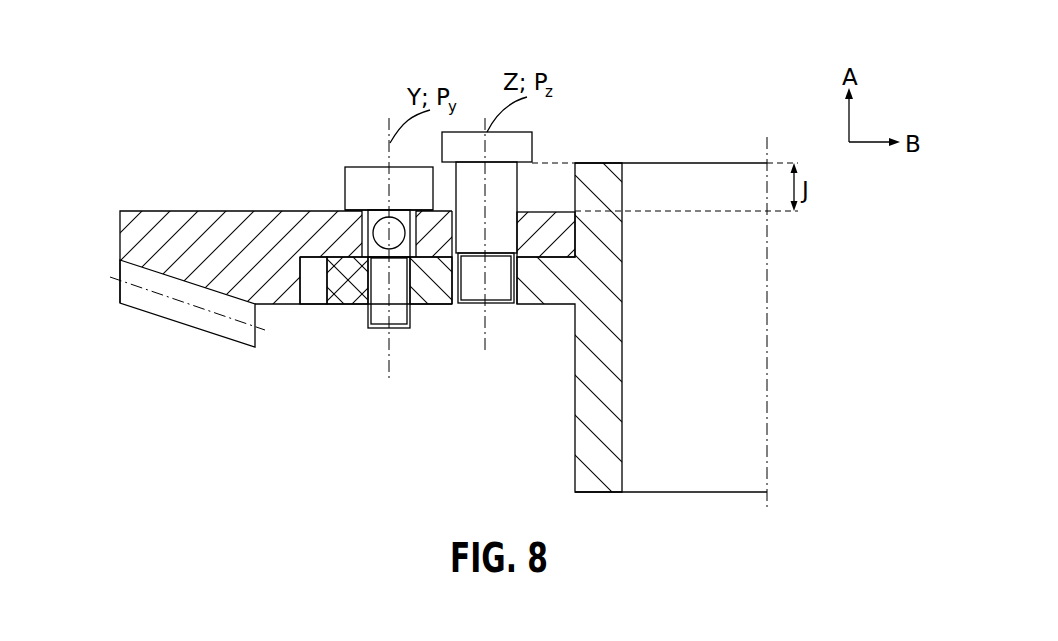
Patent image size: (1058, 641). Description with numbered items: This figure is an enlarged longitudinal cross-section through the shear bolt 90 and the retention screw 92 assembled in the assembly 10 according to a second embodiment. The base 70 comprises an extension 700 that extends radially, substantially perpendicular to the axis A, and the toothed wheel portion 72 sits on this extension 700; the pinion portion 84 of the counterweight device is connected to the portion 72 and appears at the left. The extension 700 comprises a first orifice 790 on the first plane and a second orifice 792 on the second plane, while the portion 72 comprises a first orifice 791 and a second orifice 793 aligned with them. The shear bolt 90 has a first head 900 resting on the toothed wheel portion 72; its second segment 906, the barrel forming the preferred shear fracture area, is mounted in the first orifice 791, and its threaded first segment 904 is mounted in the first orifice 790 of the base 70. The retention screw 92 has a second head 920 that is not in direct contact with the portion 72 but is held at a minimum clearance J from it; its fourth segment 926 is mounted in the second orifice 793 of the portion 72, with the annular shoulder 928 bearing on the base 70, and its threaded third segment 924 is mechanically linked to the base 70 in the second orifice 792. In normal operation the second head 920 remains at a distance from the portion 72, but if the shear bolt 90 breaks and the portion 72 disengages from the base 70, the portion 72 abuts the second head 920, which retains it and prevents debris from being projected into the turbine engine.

The assembly 10 is at (762, 68).
The base 70 is at (745, 416).
The toothed wheel portion 72 is at (178, 240).
The pinion portion 84 is at (137, 312).
The shear bolt 90 is at (360, 147).
The retention screw 92 is at (568, 108).
The extension 700 is at (557, 280).
The first orifice 790 is at (363, 297).
The first orifice 791 is at (327, 273).
The second orifice 792 is at (517, 263).
The second orifice 793 is at (523, 220).
The first head 900 is at (345, 162).
The first segment 904 is at (400, 332).
The second segment 906 is at (348, 212).
The second head 920 is at (518, 155).
The third segment 924 is at (493, 273).
The fourth segment 926 is at (502, 198).
The annular shoulder 928 is at (437, 260).